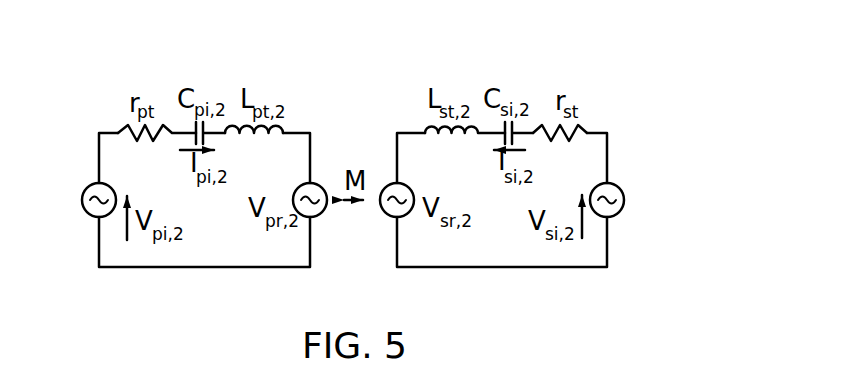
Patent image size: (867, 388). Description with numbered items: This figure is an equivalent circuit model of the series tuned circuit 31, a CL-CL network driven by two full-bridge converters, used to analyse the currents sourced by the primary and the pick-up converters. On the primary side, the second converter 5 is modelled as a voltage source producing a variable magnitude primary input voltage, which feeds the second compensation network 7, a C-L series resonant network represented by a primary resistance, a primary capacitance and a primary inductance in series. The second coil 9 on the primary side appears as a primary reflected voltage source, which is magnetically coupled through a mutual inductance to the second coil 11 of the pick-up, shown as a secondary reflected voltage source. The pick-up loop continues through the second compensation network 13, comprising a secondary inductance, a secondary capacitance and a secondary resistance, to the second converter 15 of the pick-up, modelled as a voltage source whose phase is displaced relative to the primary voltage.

The second converter 5 is at (85, 177).
The second compensation network 7 is at (222, 93).
The second coil 9 is at (322, 173).
The second coil 11 is at (383, 222).
The second compensation network 13 is at (523, 84).
The series tuned circuit 31 is at (596, 122).
The second converter 15 is at (622, 170).